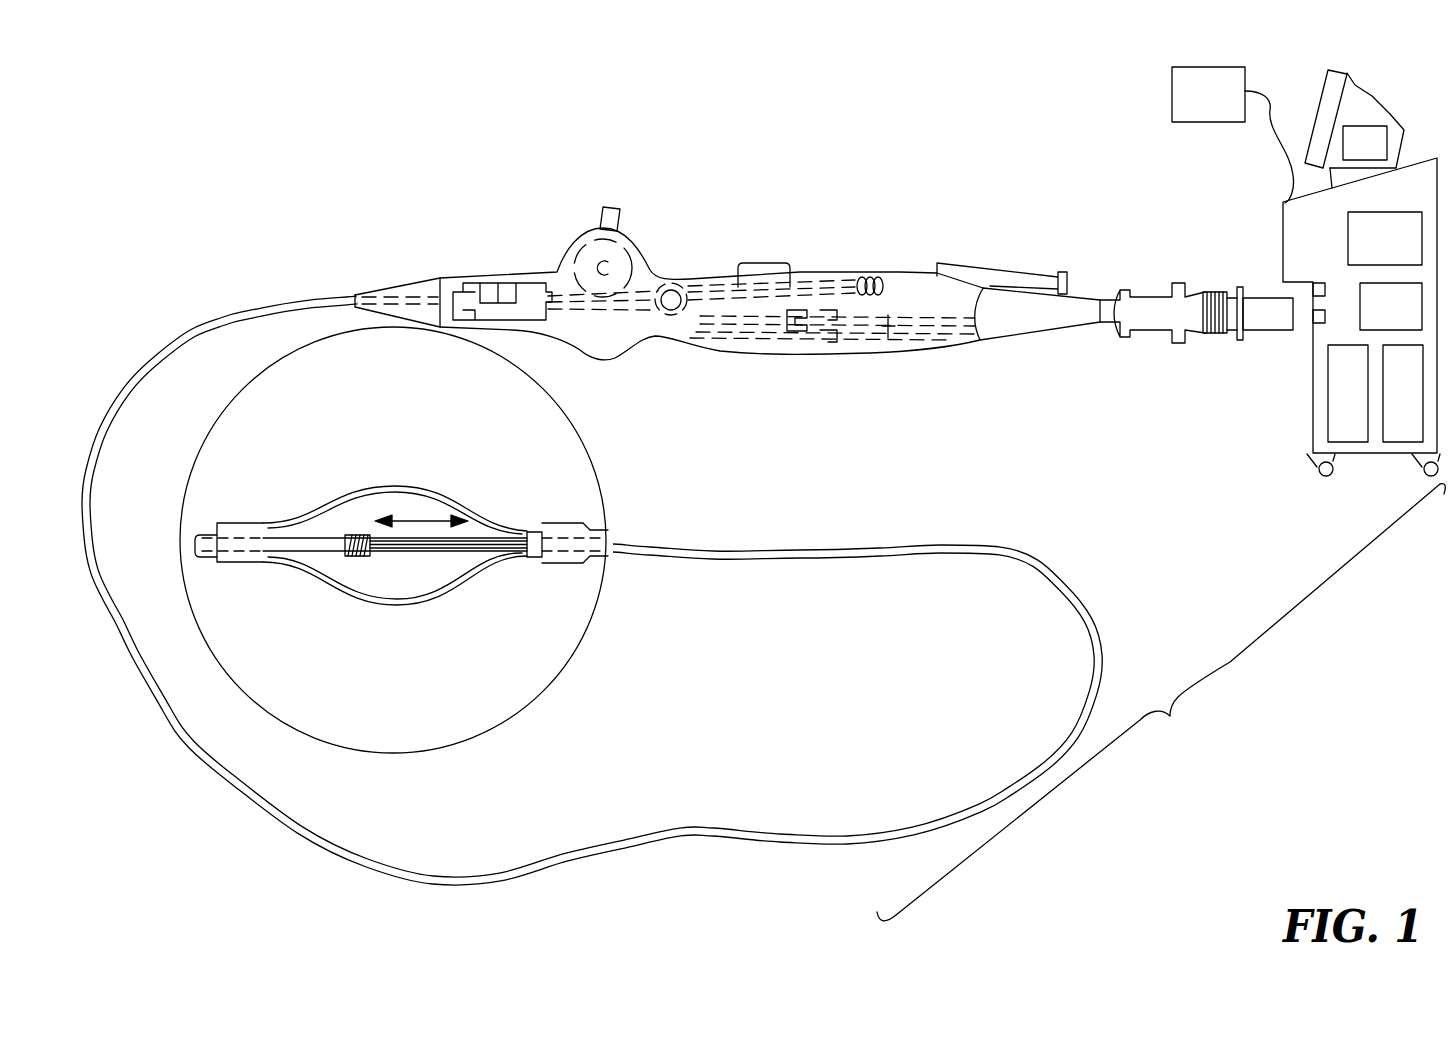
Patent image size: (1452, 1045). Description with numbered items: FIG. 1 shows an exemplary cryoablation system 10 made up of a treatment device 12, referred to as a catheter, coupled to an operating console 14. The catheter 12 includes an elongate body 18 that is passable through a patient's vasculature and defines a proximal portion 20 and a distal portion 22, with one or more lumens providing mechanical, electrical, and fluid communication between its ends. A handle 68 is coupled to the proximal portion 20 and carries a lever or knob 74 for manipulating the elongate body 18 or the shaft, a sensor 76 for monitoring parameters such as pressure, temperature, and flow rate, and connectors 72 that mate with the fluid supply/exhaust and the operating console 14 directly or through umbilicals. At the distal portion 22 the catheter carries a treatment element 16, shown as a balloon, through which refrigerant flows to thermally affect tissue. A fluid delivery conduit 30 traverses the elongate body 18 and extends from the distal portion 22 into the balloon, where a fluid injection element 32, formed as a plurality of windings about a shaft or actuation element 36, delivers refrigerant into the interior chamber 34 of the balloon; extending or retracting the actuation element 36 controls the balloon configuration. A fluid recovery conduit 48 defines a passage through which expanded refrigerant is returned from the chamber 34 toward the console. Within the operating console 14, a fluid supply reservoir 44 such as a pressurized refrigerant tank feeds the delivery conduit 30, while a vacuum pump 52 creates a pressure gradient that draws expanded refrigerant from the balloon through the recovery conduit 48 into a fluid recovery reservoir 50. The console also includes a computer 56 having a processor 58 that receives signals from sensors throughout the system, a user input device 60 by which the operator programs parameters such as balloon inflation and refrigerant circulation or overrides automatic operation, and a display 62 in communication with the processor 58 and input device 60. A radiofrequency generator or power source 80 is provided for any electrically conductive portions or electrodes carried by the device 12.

The cryoablation system 10 is at (1161, 702).
The treatment device 12 is at (454, 155).
The operating console 14 is at (1283, 233).
The treatment element 16 is at (387, 485).
The elongate body 18 is at (190, 743).
The proximal portion 20 is at (240, 310).
The distal portion 22 is at (662, 548).
The fluid delivery conduit 30 is at (448, 553).
The fluid injection element 32 is at (359, 557).
The interior chamber 34 is at (398, 515).
The actuation element 36 is at (310, 548).
The fluid supply reservoir 44 is at (1348, 393).
The fluid recovery conduit 48 is at (551, 530).
The fluid recovery reservoir 50 is at (1403, 393).
The vacuum pump 52 is at (1391, 306).
The computer 56 is at (1353, 108).
The processor 58 is at (1365, 143).
The user input device 60 is at (1233, 135).
The display 62 is at (1322, 85).
The handle 68 is at (822, 272).
The connector 72 is at (1265, 332).
The lever or knob 74 is at (615, 205).
The sensor 76 is at (535, 290).
The power source 80 is at (1385, 238).